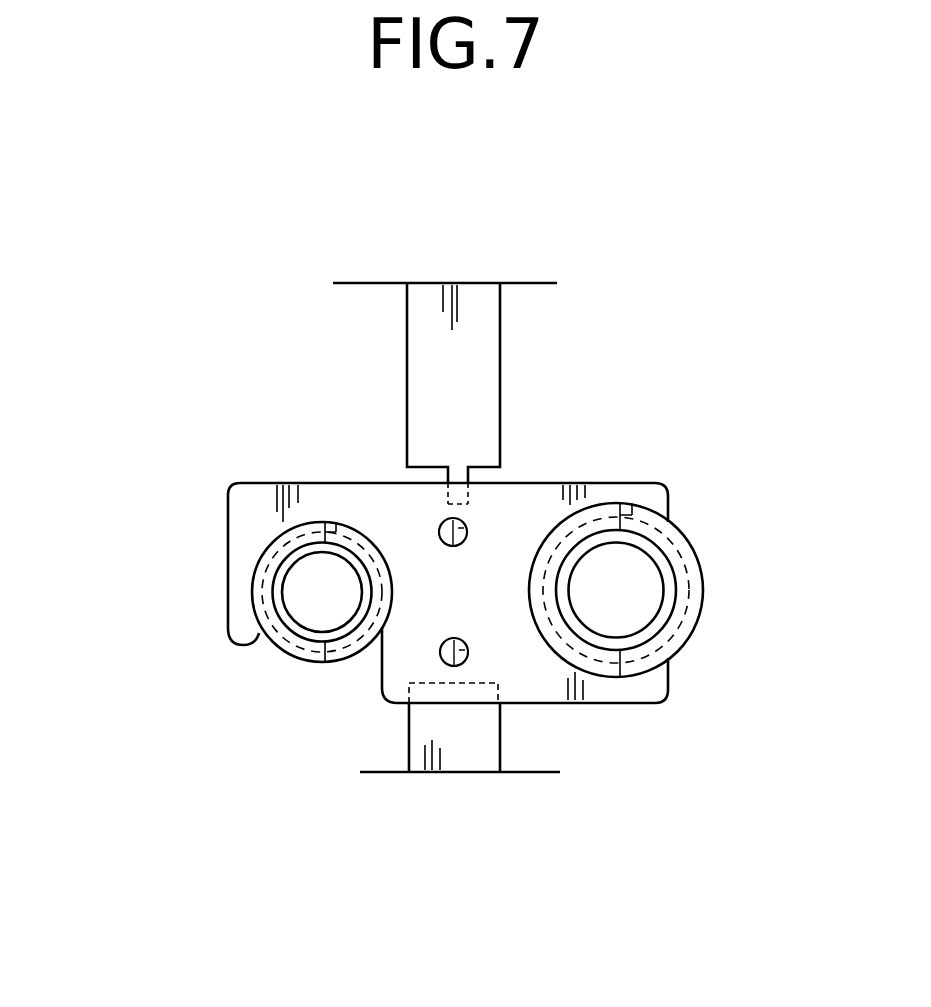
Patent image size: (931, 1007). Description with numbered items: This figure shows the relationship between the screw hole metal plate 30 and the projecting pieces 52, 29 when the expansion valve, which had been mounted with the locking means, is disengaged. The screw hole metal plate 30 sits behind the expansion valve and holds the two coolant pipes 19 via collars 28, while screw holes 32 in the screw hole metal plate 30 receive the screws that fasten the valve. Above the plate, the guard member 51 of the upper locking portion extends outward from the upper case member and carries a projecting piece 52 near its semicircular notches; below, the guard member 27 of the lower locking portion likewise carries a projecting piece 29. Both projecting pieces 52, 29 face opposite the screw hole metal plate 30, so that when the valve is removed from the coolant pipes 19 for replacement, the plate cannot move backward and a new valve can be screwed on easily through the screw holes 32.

The coolant pipes 19 is at (264, 583).
The guard member 27 is at (392, 777).
The collars 28 is at (300, 650).
The projecting piece 29 is at (455, 740).
The screw hole metal plate 30 is at (318, 498).
The screw holes 32 is at (468, 520).
The guard member 51 is at (362, 283).
The projecting piece 52 is at (473, 380).